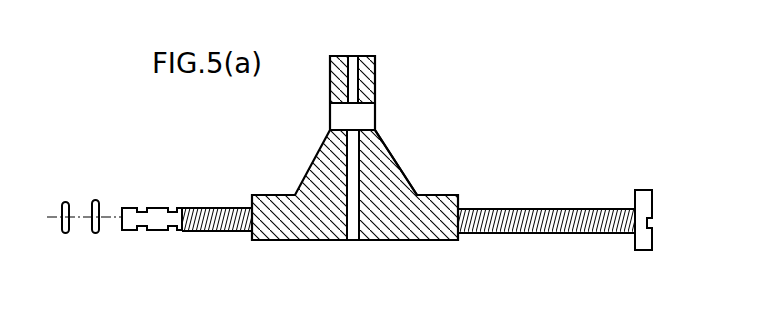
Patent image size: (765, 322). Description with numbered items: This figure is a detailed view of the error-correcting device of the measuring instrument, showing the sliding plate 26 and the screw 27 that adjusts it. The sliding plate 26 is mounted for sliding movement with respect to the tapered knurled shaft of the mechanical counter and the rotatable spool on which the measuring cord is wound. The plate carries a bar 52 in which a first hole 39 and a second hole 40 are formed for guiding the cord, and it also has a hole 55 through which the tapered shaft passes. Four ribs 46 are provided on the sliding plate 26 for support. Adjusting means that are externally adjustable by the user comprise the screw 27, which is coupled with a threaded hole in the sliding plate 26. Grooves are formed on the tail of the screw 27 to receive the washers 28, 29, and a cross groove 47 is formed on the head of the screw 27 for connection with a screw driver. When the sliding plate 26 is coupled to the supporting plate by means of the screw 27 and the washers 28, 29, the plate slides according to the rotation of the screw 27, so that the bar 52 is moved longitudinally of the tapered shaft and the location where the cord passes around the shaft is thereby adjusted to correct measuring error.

The sliding plate 26 is at (355, 167).
The screw 27 is at (563, 238).
The washer 28 is at (96, 234).
The washer 29 is at (65, 234).
The first hole 39 is at (353, 241).
The second hole 40 is at (357, 57).
The ribs 46 is at (392, 168).
The cross groove 47 is at (642, 252).
The bar 52 is at (374, 75).
The hole 55 is at (362, 117).